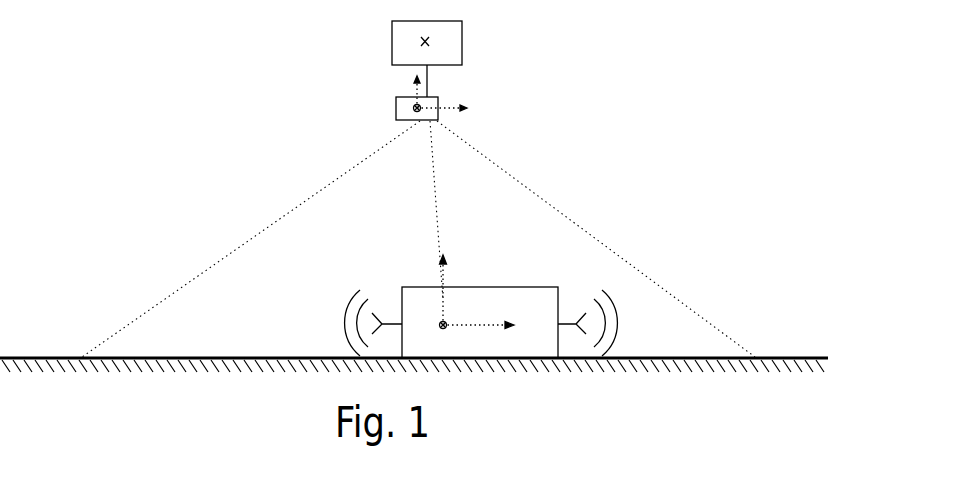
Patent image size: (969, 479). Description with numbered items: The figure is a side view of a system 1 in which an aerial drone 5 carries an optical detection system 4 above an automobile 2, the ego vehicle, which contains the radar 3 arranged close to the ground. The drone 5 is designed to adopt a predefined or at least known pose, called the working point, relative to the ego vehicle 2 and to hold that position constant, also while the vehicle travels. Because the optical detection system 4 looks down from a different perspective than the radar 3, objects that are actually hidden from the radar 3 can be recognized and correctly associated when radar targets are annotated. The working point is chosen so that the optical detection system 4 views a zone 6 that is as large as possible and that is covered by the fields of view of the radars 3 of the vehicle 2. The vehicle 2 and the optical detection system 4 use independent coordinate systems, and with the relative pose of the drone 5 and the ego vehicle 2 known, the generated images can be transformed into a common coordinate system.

The system 1 is at (655, 115).
The automobile 2 is at (515, 287).
The radar 3 is at (576, 320).
The optical detection system 4 is at (396, 110).
The aerial drone 5 is at (462, 44).
The zone 6 is at (641, 272).